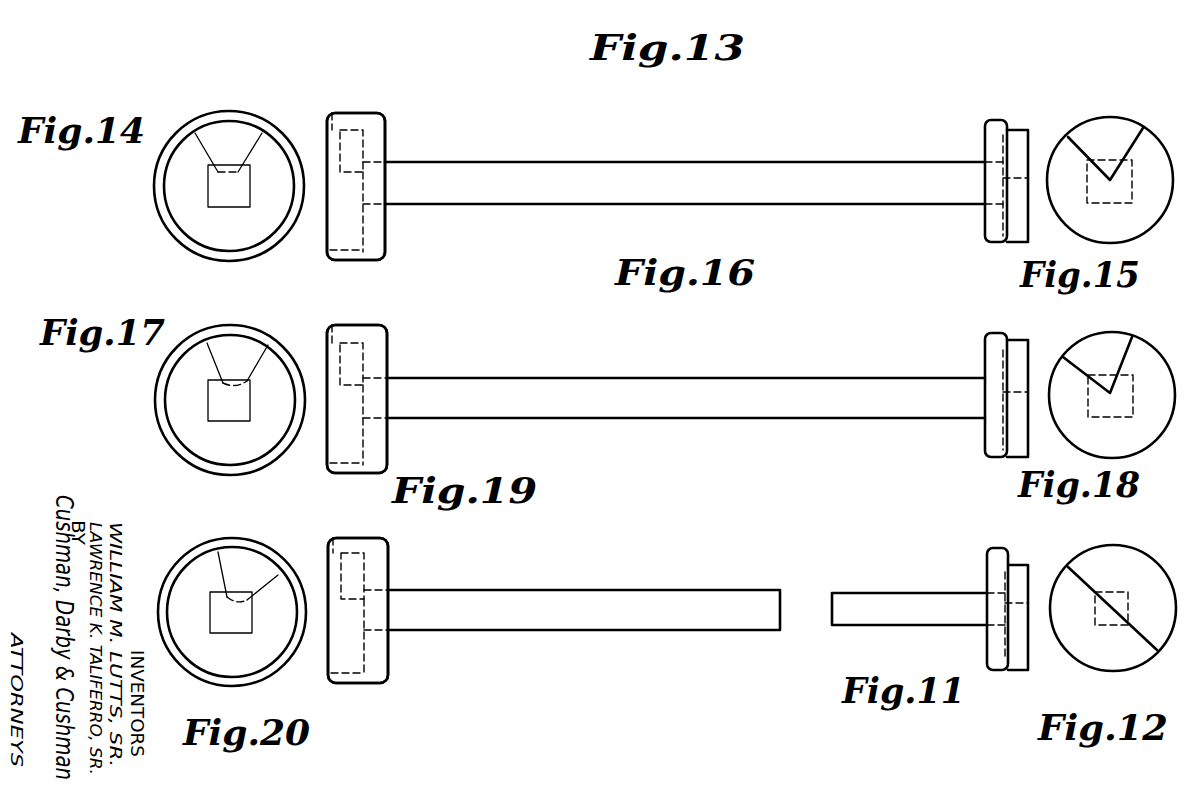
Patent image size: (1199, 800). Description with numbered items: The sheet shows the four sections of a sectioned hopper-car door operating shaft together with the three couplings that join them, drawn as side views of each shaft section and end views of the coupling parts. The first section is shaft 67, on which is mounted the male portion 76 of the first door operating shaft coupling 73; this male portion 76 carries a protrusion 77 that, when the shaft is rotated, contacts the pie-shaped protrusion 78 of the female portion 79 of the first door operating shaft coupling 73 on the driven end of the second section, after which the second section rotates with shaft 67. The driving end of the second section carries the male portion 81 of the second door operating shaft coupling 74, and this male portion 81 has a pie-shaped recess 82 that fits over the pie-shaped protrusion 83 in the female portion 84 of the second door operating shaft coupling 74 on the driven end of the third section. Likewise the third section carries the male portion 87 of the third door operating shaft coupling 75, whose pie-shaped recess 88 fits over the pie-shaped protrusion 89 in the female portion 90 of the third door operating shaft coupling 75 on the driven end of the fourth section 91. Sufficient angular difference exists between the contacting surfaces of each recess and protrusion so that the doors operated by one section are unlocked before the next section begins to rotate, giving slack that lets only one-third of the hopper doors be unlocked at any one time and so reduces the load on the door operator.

In FIG. 13, the first door operating shaft coupling 73 is at (656, 177).
In FIG. 16, the second door operating shaft coupling 74 is at (677, 394).
In FIG. 19, the third door operating shaft coupling 75 is at (372, 607).
In FIG. 12, the male portion 76 is at (1158, 650).
In FIG. 11, the protrusion 77 is at (1028, 568).
In FIG. 12, the protrusion 77 is at (1087, 657).
In FIG. 11, the shaft 67 is at (965, 625).
In FIG. 14, the pie-shaped protrusion 78 is at (247, 136).
In FIG. 13, the female portion 79 is at (390, 132).
In FIG. 14, the female portion 79 is at (272, 247).
In FIG. 13, the male portion 81 is at (990, 224).
In FIG. 15, the male portion 81 is at (1086, 228).
In FIG. 15, the pie-shaped recess 82 is at (1128, 130).
In FIG. 17, the pie-shaped protrusion 83 is at (258, 352).
In FIG. 16, the female portion 84 is at (388, 359).
In FIG. 17, the female portion 84 is at (272, 457).
In FIG. 18, the male portion 87 is at (1073, 434).
In FIG. 18, the pie-shaped recess 88 is at (1122, 344).
In FIG. 20, the pie-shaped protrusion 89 is at (265, 570).
In FIG. 19, the female portion 90 is at (388, 565).
In FIG. 20, the female portion 90 is at (272, 670).
In FIG. 19, the fourth section 91 is at (543, 595).